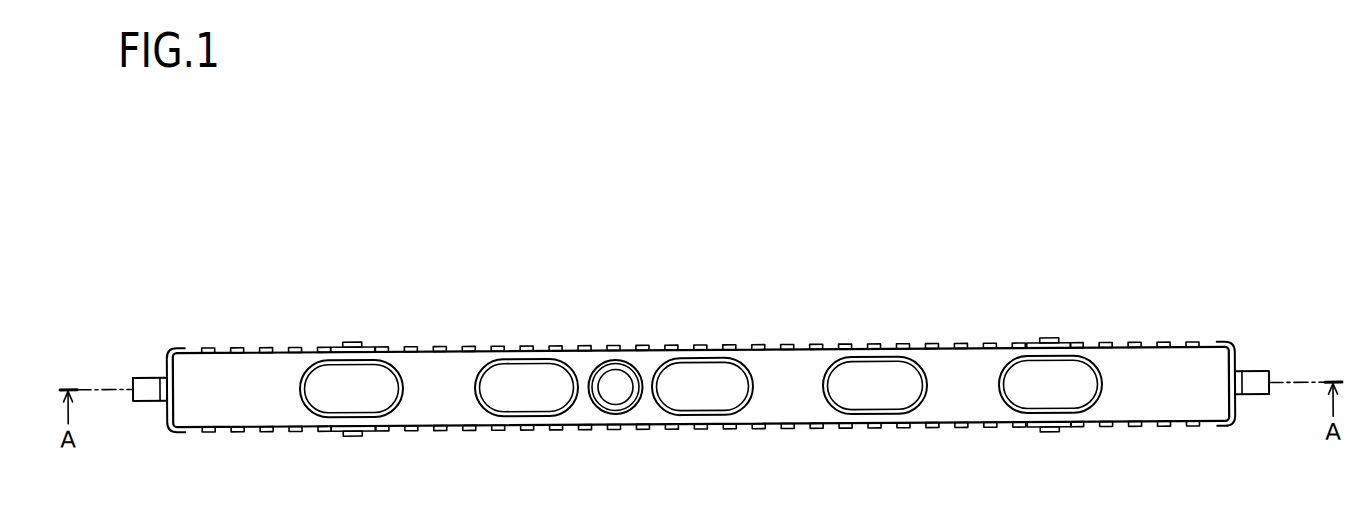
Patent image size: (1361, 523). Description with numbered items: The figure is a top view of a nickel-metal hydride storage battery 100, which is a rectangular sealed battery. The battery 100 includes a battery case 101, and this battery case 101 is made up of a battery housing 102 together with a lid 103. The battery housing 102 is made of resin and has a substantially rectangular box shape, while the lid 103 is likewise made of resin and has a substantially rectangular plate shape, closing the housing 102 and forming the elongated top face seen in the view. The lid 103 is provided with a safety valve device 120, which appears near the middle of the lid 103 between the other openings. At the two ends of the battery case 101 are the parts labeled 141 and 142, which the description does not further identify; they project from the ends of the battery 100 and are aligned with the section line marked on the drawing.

The nickel-metal hydride storage battery 100 is at (443, 318).
The battery case 101 is at (328, 284).
The battery housing 102 is at (284, 348).
The lid 103 is at (195, 357).
The safety valve device 120 is at (608, 361).
The left connector 141 is at (148, 384).
The right connector 142 is at (1254, 386).